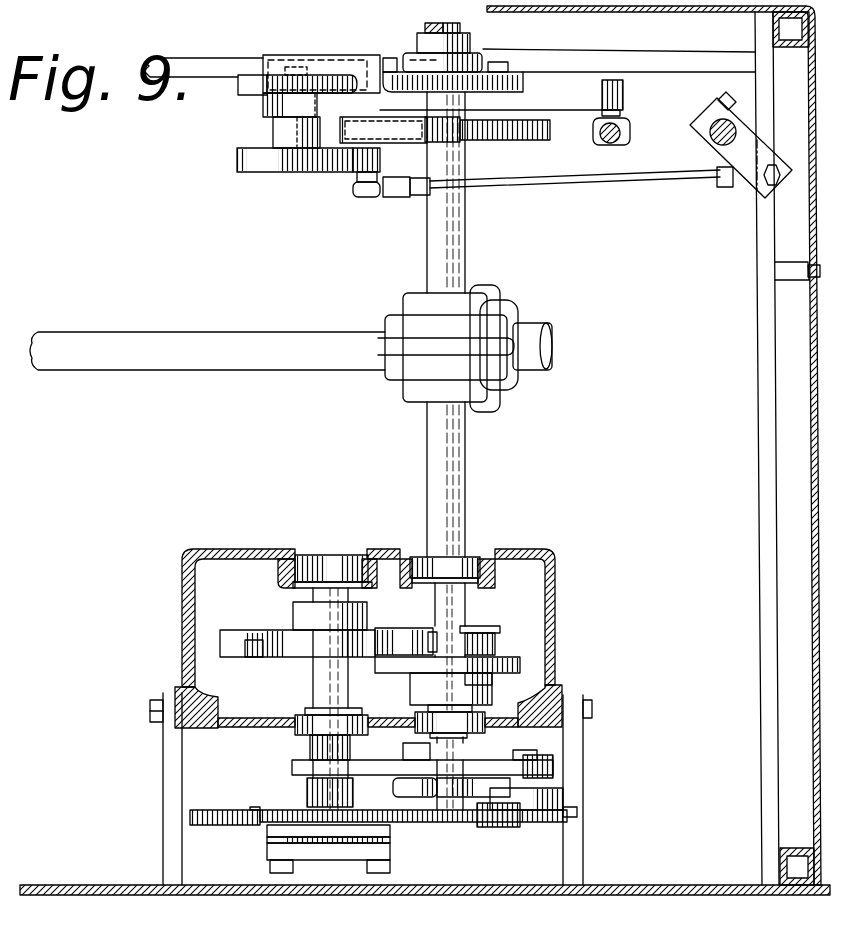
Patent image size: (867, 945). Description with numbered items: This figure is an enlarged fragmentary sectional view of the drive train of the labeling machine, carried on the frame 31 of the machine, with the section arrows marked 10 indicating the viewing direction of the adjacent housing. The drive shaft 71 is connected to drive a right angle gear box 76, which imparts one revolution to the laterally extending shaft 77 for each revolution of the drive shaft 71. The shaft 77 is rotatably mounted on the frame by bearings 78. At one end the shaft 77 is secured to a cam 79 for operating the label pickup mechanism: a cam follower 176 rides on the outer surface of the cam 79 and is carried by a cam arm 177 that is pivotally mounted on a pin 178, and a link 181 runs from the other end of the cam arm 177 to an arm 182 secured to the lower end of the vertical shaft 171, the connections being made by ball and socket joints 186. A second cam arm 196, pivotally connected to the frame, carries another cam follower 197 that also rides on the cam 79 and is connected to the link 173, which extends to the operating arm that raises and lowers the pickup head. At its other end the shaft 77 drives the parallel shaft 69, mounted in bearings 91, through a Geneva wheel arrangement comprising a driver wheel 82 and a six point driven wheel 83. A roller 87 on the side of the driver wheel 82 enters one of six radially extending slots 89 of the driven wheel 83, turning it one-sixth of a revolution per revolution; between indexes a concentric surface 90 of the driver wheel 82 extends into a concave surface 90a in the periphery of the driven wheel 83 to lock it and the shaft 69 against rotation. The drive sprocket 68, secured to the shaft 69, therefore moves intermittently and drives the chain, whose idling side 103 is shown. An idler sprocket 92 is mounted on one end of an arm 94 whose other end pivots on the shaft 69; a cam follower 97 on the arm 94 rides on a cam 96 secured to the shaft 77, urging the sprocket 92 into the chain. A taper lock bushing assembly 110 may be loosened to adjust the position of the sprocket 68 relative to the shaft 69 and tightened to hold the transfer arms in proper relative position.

The frame 31 is at (612, 895).
The bearings 78 is at (483, 58).
The pin 178 is at (278, 127).
The cam arm 177 is at (272, 158).
The cam follower 176 is at (337, 133).
The cam follower 197 is at (455, 128).
The cam 79 is at (543, 147).
The cam arm 196 is at (625, 100).
The link 173 is at (625, 135).
The ball and socket joints 186 is at (365, 193).
The link 181 is at (560, 178).
The arm 182 is at (740, 162).
The vertical shaft 171 is at (715, 143).
The shaft 77 is at (427, 258).
The right angle gear box 76 is at (435, 383).
The drive shaft 71 is at (152, 355).
The gear housing 10 is at (227, 688).
The bearings 91 is at (318, 572).
The shaft 69 is at (322, 682).
The driven wheel 83 is at (230, 635).
The slots 89 is at (250, 658).
The concave surface 90a is at (403, 633).
The roller 87 is at (497, 652).
The concentric surface 90 is at (490, 634).
The driver wheel 82 is at (520, 663).
The arm 94 is at (555, 770).
The cam follower 97 is at (415, 797).
The cam 96 is at (465, 797).
The idler sprocket 92 is at (578, 812).
The drive sprocket 68 is at (425, 818).
The idling side 103 is at (258, 810).
The taper lock bushing assembly 110 is at (258, 850).